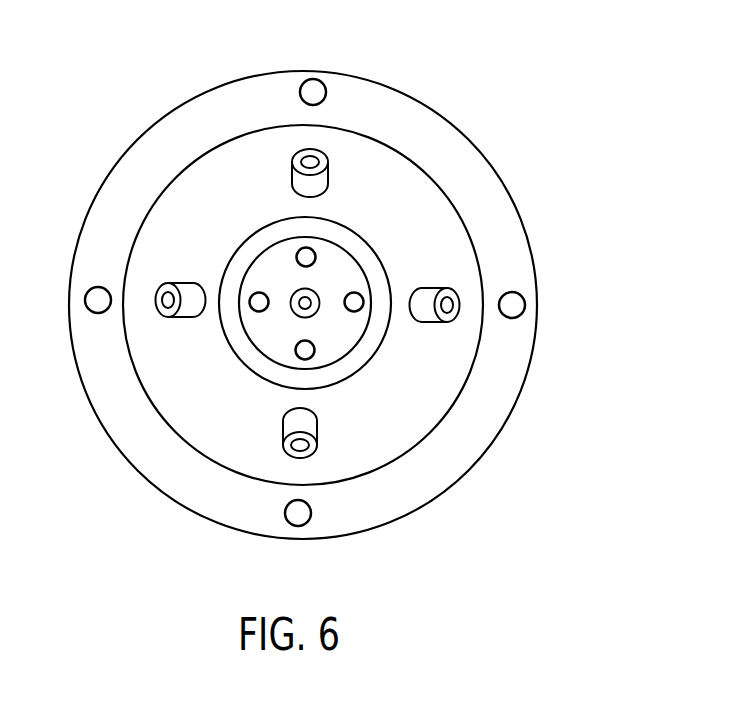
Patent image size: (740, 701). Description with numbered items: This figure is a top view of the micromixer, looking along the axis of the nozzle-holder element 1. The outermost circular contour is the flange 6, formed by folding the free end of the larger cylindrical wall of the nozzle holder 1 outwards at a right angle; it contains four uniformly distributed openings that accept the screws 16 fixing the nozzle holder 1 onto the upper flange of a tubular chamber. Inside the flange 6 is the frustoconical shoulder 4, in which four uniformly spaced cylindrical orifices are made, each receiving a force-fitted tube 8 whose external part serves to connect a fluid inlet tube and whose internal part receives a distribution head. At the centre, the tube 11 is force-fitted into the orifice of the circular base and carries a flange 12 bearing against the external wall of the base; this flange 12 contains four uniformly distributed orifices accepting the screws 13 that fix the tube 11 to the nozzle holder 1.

The nozzle-holder element 1 is at (462, 112).
The frustoconical shoulder 4 is at (433, 208).
The flange 6 is at (515, 230).
The tube 8 is at (320, 180).
The tube 11 is at (298, 296).
The flange 12 is at (270, 335).
The screws 13 is at (302, 254).
The screws 16 is at (310, 88).